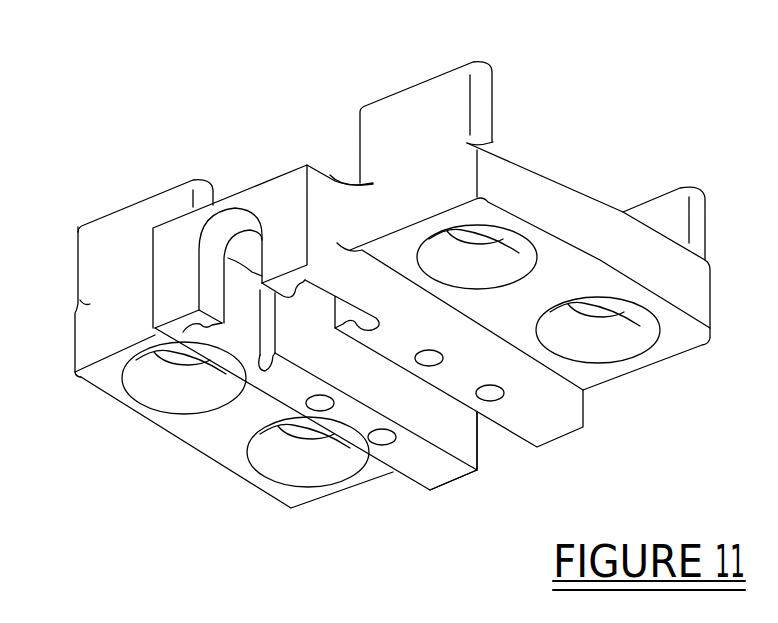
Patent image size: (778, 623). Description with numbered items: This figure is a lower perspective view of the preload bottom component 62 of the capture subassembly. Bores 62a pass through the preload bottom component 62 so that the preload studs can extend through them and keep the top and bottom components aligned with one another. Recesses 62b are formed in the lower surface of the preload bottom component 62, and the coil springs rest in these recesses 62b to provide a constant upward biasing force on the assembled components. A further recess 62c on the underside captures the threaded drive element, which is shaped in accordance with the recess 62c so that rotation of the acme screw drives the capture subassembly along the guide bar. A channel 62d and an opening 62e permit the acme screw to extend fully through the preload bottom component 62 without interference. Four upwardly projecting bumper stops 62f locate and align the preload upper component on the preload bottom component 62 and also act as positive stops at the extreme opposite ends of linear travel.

The preload bottom component 62 is at (243, 80).
The bores 62a is at (467, 233).
The recesses 62b is at (153, 387).
The recess 62c is at (230, 324).
The channel 62d is at (433, 422).
The opening 62e is at (217, 250).
The bumper stops 62f is at (113, 230).